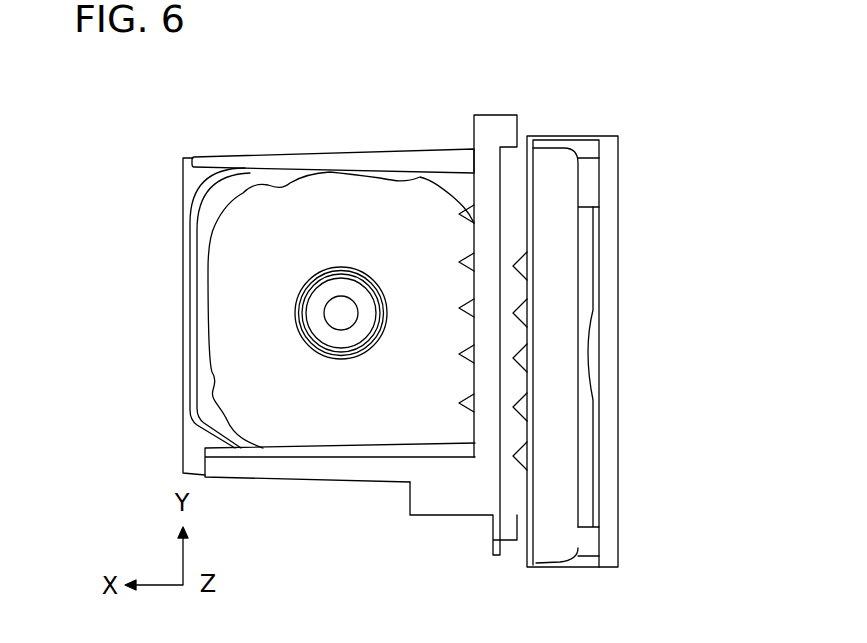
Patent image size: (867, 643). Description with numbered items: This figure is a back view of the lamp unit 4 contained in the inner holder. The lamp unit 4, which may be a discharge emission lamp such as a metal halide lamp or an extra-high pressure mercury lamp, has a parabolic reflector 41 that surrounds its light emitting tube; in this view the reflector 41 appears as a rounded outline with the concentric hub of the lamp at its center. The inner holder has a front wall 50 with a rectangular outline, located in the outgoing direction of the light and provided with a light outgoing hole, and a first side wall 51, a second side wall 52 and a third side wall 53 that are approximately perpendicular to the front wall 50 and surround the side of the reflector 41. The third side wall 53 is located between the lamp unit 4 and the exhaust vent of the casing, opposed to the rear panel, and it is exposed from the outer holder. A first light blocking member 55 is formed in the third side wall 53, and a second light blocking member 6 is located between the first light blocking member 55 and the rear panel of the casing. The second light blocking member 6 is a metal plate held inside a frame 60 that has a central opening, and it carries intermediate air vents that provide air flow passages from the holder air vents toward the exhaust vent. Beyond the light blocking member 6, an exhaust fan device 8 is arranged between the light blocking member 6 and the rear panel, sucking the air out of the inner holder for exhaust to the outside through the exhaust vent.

The lamp unit 4 is at (166, 293).
The parabolic reflector 41 is at (250, 233).
The front wall 50 is at (182, 348).
The first side wall 51 is at (297, 468).
The second side wall 52 is at (360, 150).
The third side wall 53 is at (498, 120).
The first light blocking member 55 is at (472, 400).
The second light blocking member 6 is at (517, 252).
The frame 60 is at (548, 551).
The exhaust fan device 8 is at (618, 378).